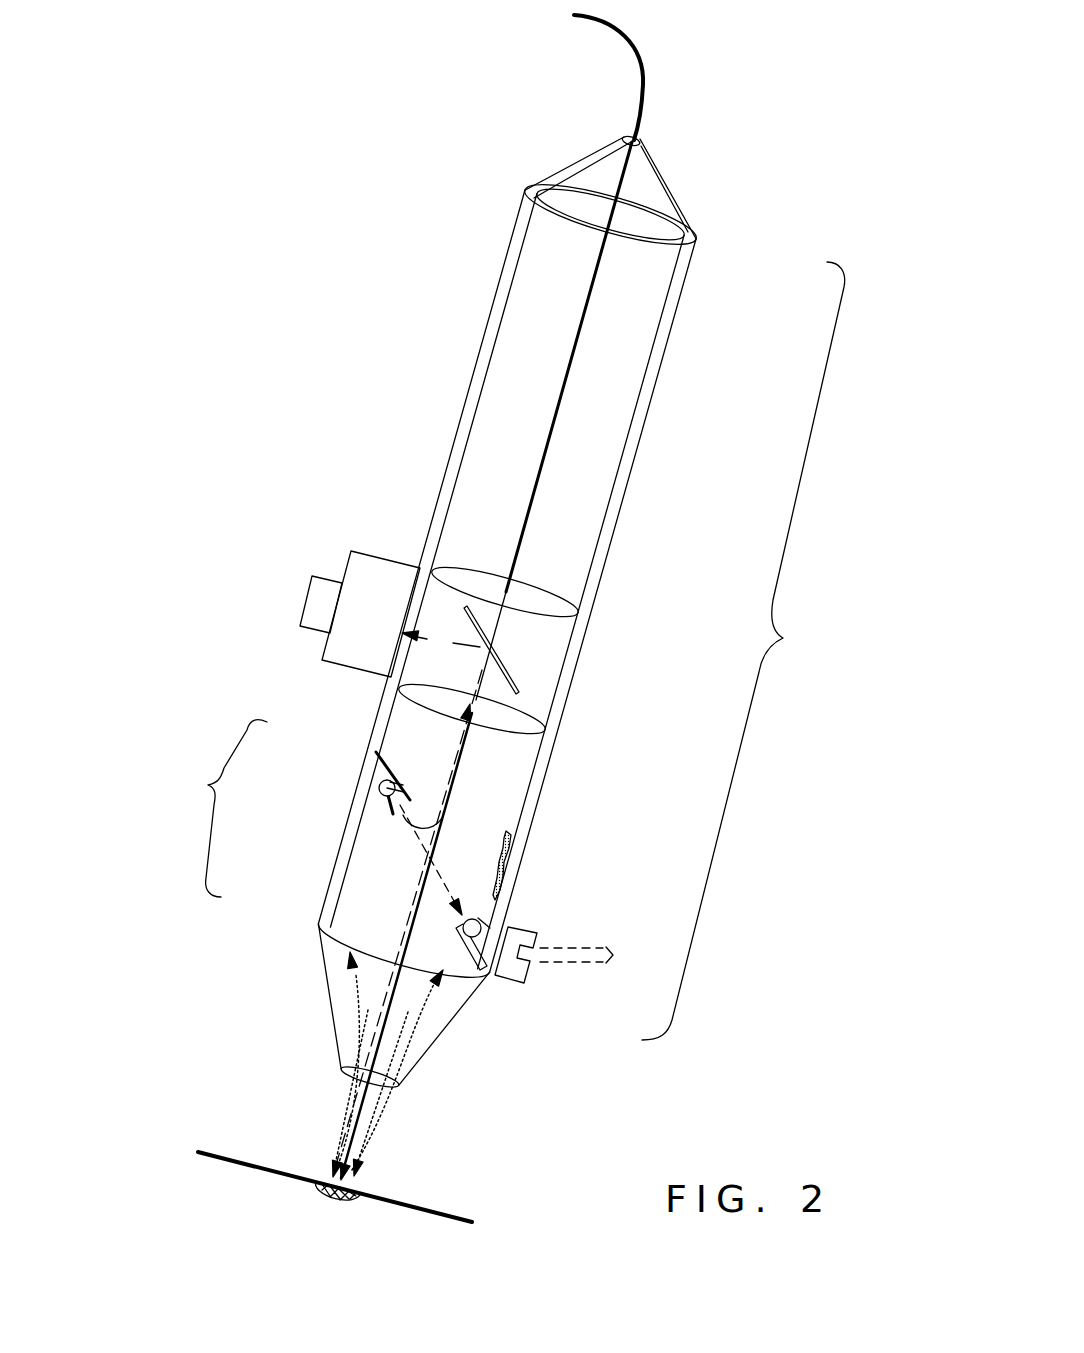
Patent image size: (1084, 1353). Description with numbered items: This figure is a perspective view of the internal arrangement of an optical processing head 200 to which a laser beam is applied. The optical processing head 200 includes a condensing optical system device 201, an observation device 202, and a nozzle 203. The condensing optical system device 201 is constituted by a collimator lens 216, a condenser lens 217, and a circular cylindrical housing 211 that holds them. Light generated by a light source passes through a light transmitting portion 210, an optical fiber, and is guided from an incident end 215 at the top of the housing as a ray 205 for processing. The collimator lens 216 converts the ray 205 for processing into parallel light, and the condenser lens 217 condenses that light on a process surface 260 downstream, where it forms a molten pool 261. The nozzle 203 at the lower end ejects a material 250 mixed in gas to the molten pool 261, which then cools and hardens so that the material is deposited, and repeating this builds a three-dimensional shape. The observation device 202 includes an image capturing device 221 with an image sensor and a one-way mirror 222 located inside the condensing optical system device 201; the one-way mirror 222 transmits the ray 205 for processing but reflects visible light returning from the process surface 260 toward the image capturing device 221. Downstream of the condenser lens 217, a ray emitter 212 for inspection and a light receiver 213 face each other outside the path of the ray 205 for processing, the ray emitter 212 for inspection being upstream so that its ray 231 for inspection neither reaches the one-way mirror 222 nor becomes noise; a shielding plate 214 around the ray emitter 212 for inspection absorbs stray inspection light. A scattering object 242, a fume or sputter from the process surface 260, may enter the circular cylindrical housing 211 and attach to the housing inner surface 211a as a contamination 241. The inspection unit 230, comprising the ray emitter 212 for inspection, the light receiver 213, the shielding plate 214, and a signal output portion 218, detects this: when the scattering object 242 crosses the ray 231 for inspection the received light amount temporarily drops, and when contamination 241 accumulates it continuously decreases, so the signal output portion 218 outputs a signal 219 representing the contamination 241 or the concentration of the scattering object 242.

The optical processing head 200 is at (308, 252).
The condensing optical system device 201 is at (743, 651).
The observation device 202 is at (362, 550).
The nozzle 203 is at (430, 1030).
The ray for processing 205 is at (577, 343).
The light transmitting portion 210 is at (616, 33).
The circular cylindrical housing 211 is at (660, 348).
The housing inner surface 211a is at (638, 383).
The ray emitter for inspection 212 is at (373, 792).
The light receiver 213 is at (487, 927).
The shielding plate 214 is at (373, 783).
The incident end 215 is at (645, 143).
The collimator lens 216 is at (575, 603).
The condenser lens 217 is at (550, 722).
The signal output portion 218 is at (513, 977).
The signal 219 is at (577, 942).
The image capturing device 221 is at (317, 592).
The one-way mirror 222 is at (512, 675).
The inspection unit 230 is at (218, 808).
The ray for inspection 231 is at (440, 873).
The contamination 241 is at (517, 850).
The scattering object 242 is at (348, 1012).
The material 250 is at (372, 1135).
The process surface 260 is at (222, 1155).
The molten pool 261 is at (315, 1187).